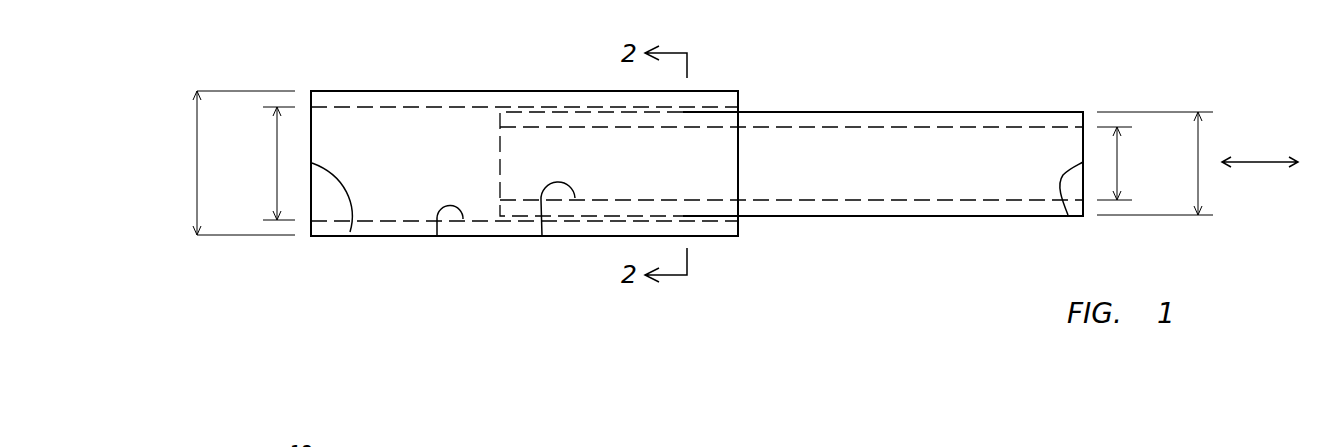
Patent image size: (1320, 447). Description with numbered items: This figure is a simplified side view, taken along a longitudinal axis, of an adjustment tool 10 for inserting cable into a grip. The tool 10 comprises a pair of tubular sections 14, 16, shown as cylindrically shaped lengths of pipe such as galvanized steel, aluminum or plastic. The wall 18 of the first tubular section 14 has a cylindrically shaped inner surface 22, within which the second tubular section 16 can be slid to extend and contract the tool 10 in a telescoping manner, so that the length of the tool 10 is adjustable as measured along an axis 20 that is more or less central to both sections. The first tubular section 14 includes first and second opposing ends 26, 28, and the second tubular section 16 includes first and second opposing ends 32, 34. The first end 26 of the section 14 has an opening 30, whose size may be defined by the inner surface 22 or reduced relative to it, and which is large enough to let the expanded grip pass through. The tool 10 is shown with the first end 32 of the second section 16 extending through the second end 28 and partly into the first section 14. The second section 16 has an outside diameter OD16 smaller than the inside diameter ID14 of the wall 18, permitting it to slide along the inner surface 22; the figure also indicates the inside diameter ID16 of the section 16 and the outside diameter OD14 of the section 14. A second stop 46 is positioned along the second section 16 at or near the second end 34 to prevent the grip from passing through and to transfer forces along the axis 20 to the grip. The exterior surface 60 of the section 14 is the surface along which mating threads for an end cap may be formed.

The adjustment tool 10 is at (1061, 49).
The first tubular section 14 is at (440, 91).
The second tubular section 16 is at (897, 216).
The wall 18 is at (615, 229).
The axis 20 is at (1255, 160).
The inner surface 22 is at (437, 236).
The first end 26 is at (328, 91).
The second end 28 is at (720, 91).
The opening 30 is at (350, 232).
The first end 32 is at (542, 236).
The second end 34 is at (1065, 112).
The second stop 46 is at (1068, 215).
The exterior surface 60 is at (517, 91).
The outside diameter of the first section OD14 is at (197, 190).
The inside diameter of the first section ID14 is at (277, 163).
The outside diameter of the second section OD16 is at (1198, 190).
The inside diameter of the second section ID16 is at (1117, 158).